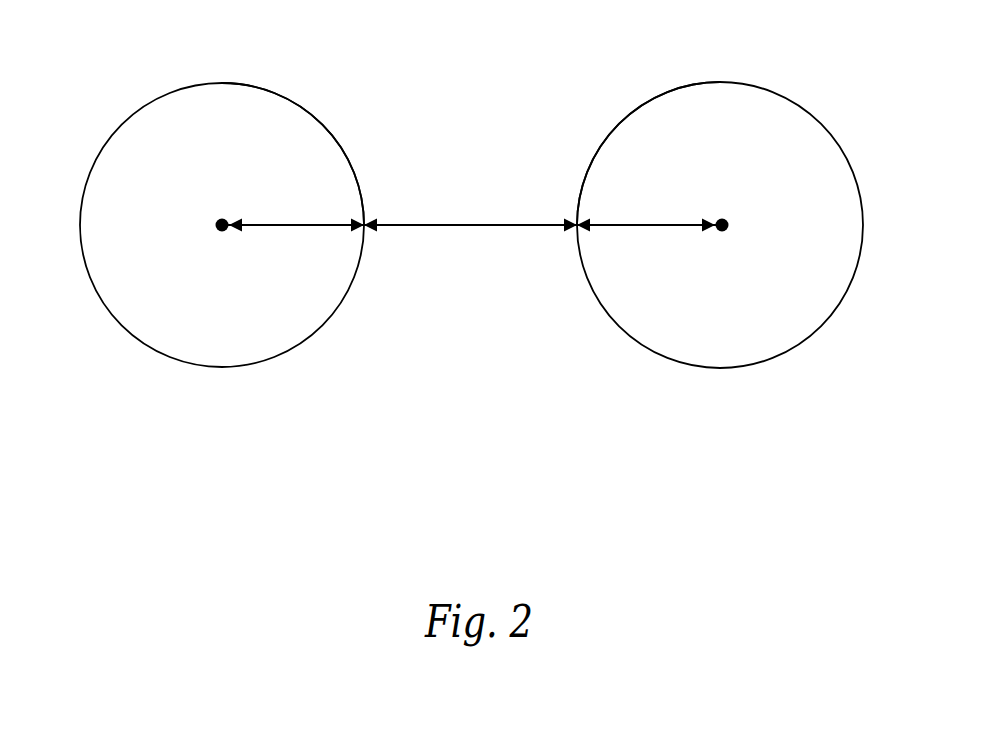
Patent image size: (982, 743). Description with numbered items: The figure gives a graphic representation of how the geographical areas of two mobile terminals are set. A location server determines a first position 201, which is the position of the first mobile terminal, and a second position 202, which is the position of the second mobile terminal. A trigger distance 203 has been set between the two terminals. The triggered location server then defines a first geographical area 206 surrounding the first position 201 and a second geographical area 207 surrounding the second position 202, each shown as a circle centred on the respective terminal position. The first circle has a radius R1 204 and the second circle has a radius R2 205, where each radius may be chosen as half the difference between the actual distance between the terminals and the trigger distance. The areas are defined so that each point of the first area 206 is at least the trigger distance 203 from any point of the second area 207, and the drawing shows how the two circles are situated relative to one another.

The first position 201 is at (210, 223).
The second position 202 is at (742, 223).
The trigger distance 203 is at (450, 240).
The radius R1 204 is at (283, 235).
The radius R2 205 is at (648, 238).
The first geographical area 206 is at (350, 148).
The second geographical area 207 is at (600, 148).